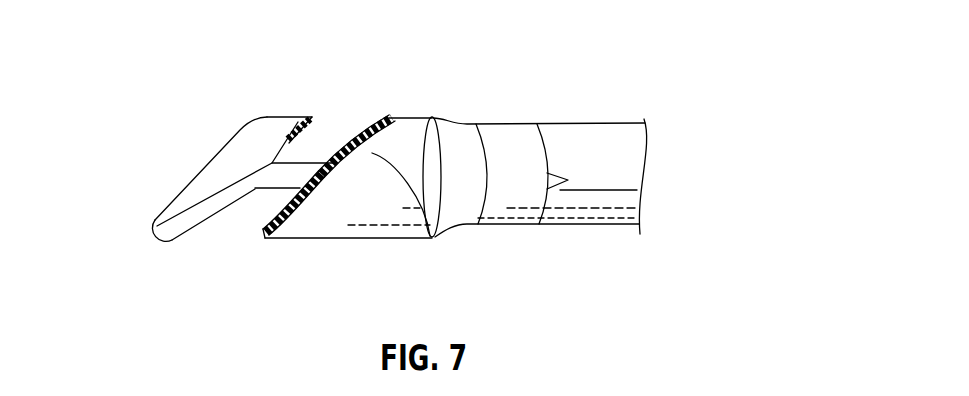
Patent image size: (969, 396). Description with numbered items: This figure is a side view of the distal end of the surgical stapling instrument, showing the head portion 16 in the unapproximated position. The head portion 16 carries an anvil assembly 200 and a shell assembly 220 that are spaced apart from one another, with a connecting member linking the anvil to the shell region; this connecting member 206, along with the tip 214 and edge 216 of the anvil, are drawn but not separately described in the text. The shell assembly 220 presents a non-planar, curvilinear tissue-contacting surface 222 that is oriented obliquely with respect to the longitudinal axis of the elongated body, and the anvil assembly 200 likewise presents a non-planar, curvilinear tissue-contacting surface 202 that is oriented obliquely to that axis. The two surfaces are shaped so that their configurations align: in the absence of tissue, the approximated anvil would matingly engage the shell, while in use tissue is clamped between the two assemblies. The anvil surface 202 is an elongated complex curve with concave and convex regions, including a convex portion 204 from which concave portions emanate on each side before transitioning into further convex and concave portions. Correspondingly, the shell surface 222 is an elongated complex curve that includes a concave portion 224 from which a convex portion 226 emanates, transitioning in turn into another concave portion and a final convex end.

The head portion 16 is at (485, 53).
The anvil assembly 200 is at (203, 181).
The tissue-contacting surface 202 is at (313, 117).
The convex portion 204 is at (195, 236).
The connecting shaft 206 is at (268, 160).
The distal tip of first jaw 214 is at (152, 227).
The top edge of first jaw 216 is at (312, 116).
The shell assembly 220 is at (418, 130).
The tissue-contacting surface 222 is at (378, 125).
The concave portion 224 is at (433, 235).
The convex portion 226 is at (303, 238).